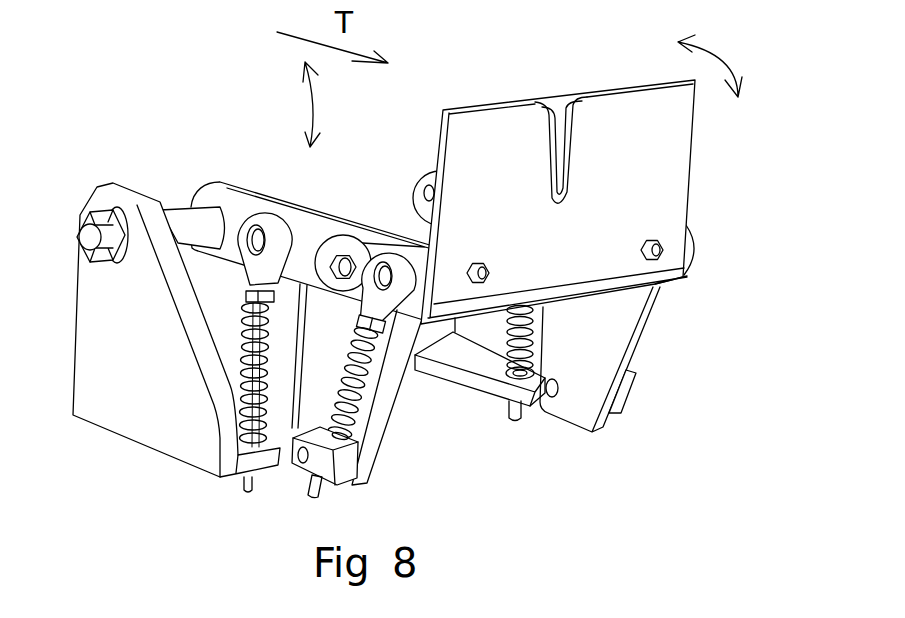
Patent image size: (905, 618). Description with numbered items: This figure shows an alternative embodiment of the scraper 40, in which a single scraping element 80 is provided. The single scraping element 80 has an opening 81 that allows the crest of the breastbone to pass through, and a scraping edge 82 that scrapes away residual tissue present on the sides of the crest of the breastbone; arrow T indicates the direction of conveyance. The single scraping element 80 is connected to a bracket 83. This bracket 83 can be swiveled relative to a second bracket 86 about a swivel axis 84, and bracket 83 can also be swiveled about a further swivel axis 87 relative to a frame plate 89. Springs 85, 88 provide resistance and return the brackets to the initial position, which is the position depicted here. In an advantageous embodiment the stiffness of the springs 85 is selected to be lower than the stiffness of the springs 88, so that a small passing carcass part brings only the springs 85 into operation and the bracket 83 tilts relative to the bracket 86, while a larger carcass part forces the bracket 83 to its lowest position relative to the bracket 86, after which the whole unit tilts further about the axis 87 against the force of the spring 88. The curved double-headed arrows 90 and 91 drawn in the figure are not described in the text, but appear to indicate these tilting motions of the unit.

The scraper 40 is at (507, 458).
The single scraping element 80 is at (686, 195).
The opening 81 is at (563, 117).
The scraping edge 82 is at (570, 135).
The bracket 83 is at (360, 247).
The swivel axis 84 is at (332, 258).
The springs 85 is at (355, 407).
The bracket 86 is at (237, 200).
The swivel axis 87 is at (190, 213).
The springs 88 is at (247, 392).
The frame plate 89 is at (115, 420).
The pivot direction arrow 90 is at (313, 97).
The pivot direction arrow 91 is at (722, 60).